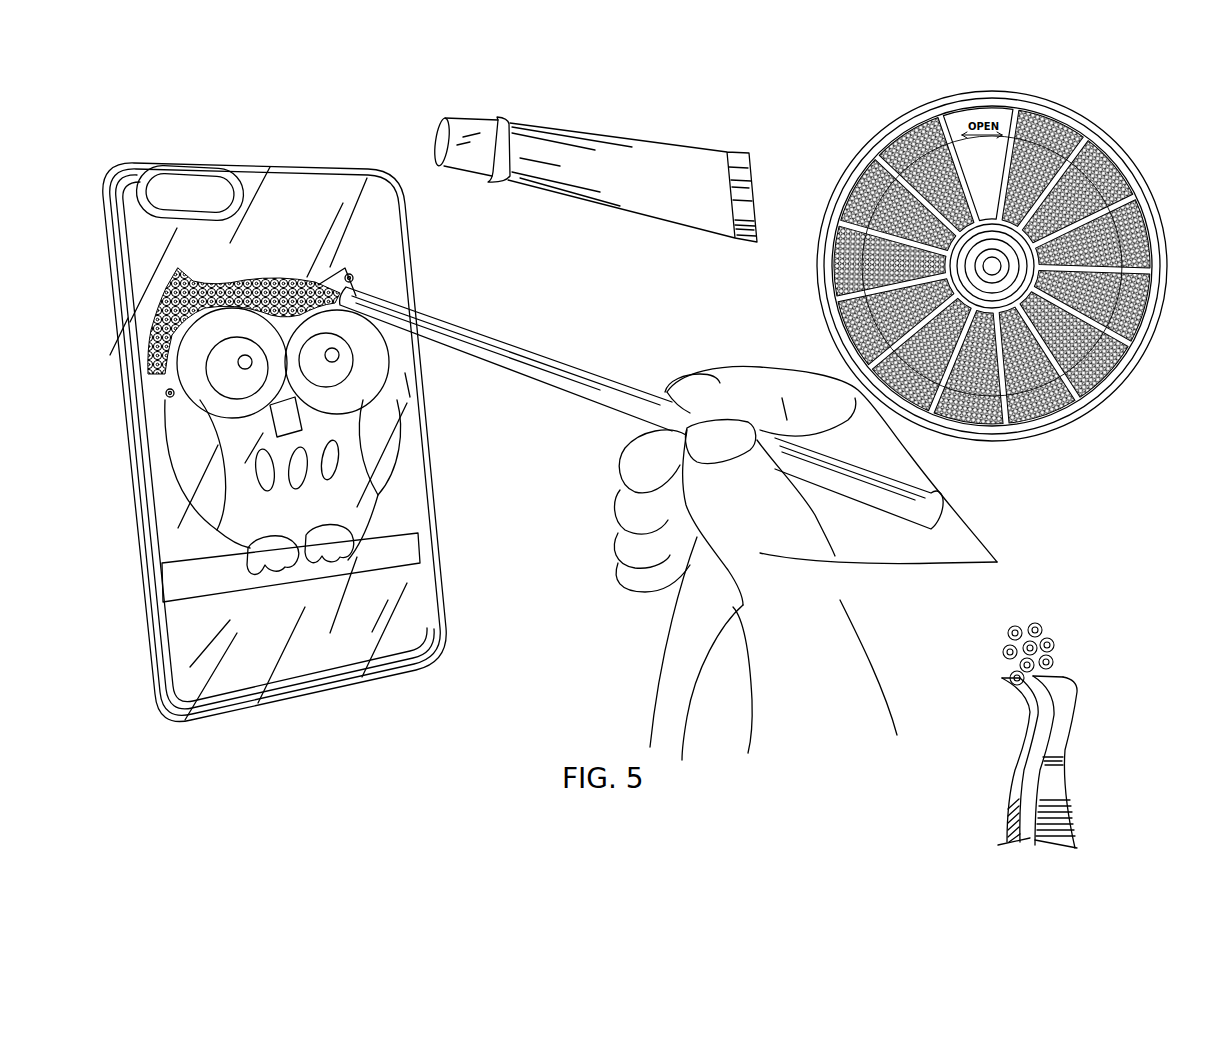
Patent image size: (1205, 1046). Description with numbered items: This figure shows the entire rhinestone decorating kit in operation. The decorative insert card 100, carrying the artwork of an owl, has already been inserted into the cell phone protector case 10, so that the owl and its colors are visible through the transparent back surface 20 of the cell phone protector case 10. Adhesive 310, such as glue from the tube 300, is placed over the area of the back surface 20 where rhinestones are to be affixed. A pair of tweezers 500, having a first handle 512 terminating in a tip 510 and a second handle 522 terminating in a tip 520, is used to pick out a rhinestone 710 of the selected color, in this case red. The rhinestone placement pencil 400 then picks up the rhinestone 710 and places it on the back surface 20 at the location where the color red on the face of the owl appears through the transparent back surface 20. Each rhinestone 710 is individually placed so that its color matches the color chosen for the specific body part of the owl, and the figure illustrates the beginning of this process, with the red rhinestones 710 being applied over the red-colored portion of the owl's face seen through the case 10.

The cell phone protector case 10 is at (308, 164).
The transparent back surface 20 is at (247, 170).
The decorative insert card 100 is at (355, 178).
The tube 300 is at (670, 153).
The adhesive 310 is at (353, 281).
The rhinestone placement pencil 400 is at (551, 351).
The pair of tweezers 500 is at (1035, 742).
The tip 510 is at (1002, 678).
The first handle 512 is at (1015, 763).
The tip 520 is at (1030, 676).
The second handle 522 is at (1057, 770).
The rhinestone 710 is at (283, 284).